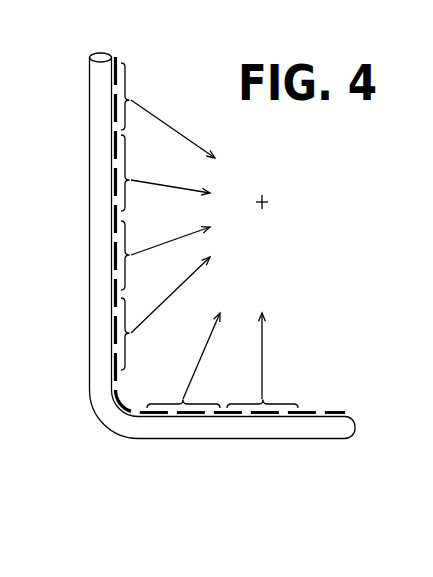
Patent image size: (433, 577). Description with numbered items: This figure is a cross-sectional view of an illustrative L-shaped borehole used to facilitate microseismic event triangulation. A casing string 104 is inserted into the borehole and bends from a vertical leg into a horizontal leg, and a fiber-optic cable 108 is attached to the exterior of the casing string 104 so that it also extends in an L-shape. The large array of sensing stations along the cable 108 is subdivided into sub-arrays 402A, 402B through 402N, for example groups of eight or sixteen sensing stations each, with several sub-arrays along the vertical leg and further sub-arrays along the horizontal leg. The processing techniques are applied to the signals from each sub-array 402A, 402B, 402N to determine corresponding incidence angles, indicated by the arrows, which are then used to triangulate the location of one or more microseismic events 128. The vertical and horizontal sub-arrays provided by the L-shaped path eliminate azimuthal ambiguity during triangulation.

The casing string 104 is at (88, 75).
The fiber optic cable 108 is at (114, 60).
The sub-array 402A is at (168, 110).
The sub-array 402B is at (165, 173).
The sub-array 402N is at (236, 360).
The microseismic event 128 is at (263, 201).